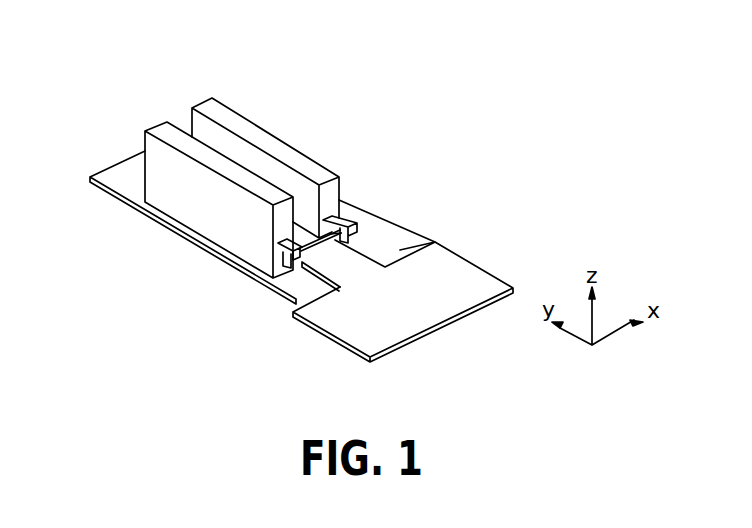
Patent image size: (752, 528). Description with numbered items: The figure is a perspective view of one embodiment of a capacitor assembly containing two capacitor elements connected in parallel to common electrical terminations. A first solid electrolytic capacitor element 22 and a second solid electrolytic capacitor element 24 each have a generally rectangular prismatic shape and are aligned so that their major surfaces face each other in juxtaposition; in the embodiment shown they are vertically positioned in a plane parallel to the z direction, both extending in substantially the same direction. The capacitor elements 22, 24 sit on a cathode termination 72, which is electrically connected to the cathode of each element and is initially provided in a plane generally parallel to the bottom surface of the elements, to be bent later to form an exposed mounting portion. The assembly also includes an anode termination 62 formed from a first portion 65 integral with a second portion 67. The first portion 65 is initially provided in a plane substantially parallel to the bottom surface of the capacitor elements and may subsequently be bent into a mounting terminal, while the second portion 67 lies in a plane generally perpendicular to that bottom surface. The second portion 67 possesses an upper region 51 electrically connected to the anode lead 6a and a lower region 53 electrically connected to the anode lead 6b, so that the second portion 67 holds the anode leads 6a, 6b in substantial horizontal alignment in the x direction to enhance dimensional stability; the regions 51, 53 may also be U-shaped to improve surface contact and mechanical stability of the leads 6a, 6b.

The first solid electrolytic capacitor element 22 is at (150, 127).
The second solid electrolytic capacitor element 24 is at (195, 104).
The cathode termination 72 is at (130, 183).
The anode lead 6a is at (281, 244).
The anode lead 6b is at (336, 217).
The upper region 51 is at (302, 261).
The lower region 53 is at (350, 241).
The anode termination 62 is at (443, 266).
The first portion 65 is at (407, 326).
The second portion 67 is at (316, 256).